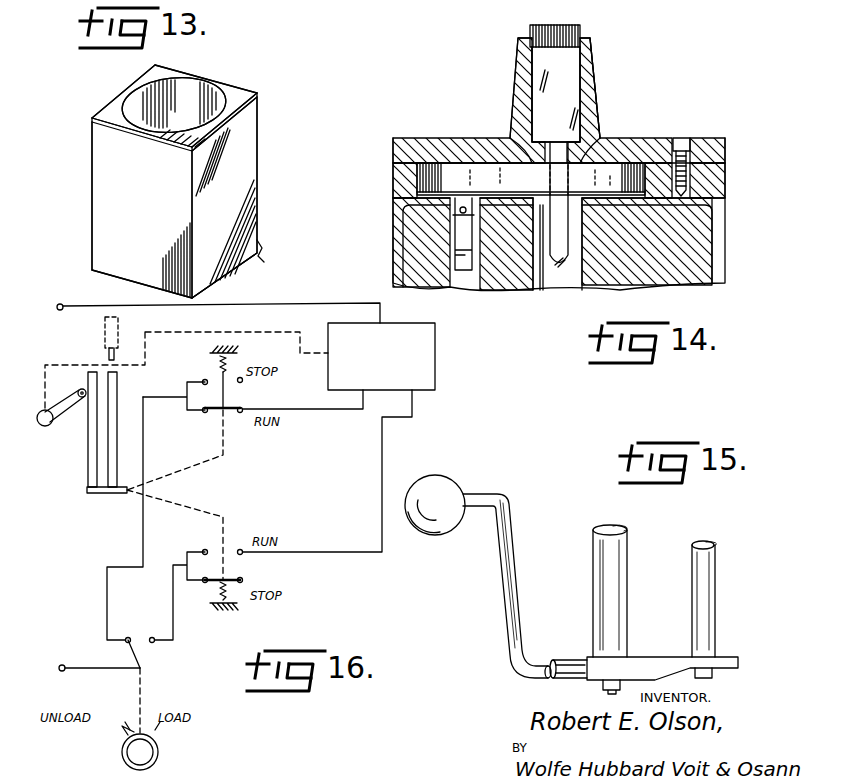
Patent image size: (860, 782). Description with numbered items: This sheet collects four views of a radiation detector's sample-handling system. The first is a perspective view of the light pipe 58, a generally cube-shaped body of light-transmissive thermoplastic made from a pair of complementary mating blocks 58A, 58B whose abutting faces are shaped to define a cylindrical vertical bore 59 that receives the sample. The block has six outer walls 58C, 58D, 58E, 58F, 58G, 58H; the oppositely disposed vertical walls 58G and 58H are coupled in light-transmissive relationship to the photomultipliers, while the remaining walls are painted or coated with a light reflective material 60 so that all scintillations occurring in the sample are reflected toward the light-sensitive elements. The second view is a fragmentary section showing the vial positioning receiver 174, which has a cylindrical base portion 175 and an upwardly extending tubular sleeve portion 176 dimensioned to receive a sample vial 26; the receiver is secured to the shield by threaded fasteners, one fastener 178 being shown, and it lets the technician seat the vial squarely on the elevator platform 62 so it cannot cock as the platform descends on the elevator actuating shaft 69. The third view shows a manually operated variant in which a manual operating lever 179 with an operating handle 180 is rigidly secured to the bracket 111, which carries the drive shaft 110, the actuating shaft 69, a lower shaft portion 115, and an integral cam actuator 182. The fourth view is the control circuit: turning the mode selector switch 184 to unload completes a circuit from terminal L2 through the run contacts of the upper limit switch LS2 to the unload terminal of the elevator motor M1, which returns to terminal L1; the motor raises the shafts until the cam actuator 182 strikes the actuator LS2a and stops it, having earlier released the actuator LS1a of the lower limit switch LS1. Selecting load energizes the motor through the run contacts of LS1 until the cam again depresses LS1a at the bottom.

In FIG. 13, the light pipe 58 is at (237, 68).
In FIG. 13, the mating block 58A is at (110, 106).
In FIG. 13, the mating block 58B is at (240, 100).
In FIG. 13, the outer wall 58C is at (108, 166).
In FIG. 13, the outer wall 58D is at (152, 76).
In FIG. 13, the outer wall 58E is at (260, 262).
In FIG. 13, the outer wall 58F is at (98, 273).
In FIG. 13, the vertical wall 58G is at (243, 152).
In FIG. 13, the vertical wall 58H is at (110, 115).
In FIG. 13, the cylindrical vertical bore 59 is at (172, 95).
In FIG. 13, the light reflective material 60 is at (258, 206).
In FIG. 14, the sample vial 26 is at (563, 62).
In FIG. 16, the sample vial 26 is at (105, 326).
In FIG. 14, the elevator platform 62 is at (574, 140).
In FIG. 16, the elevator platform 62 is at (108, 352).
In FIG. 14, the elevator actuating shaft 69 is at (555, 258).
In FIG. 15, the elevator actuating shaft 69 is at (705, 578).
In FIG. 16, the elevator actuating shaft 69 is at (118, 390).
In FIG. 14, the vial positioning receiver 174 is at (513, 100).
In FIG. 14, the cylindrical base portion 175 is at (703, 140).
In FIG. 14, the tubular sleeve portion 176 is at (597, 62).
In FIG. 14, the screw 178 is at (679, 137).
In FIG. 15, the drive shaft 110 is at (620, 554).
In FIG. 16, the drive shaft 110 is at (88, 450).
In FIG. 15, the bracket 111 is at (659, 656).
In FIG. 15, the shaft 115 is at (603, 688).
In FIG. 15, the manual operating lever 179 is at (508, 595).
In FIG. 15, the operating handle 180 is at (445, 490).
In FIG. 15, the cam actuator 182 is at (739, 657).
In FIG. 16, the mode selector switch 184 is at (158, 746).
In FIG. 16, the A.-C. source terminal L1 is at (205, 311).
In FIG. 16, the A.-C. source terminal L2 is at (85, 669).
In FIG. 16, the elevator motor M1 is at (437, 356).
In FIG. 16, the lower limit switch LS1 is at (238, 564).
In FIG. 16, the upper limit switch LS2 is at (258, 392).
In FIG. 16, the lower limit switch actuator LS1a is at (226, 525).
In FIG. 16, the upper limit switch actuator LS2a is at (248, 438).